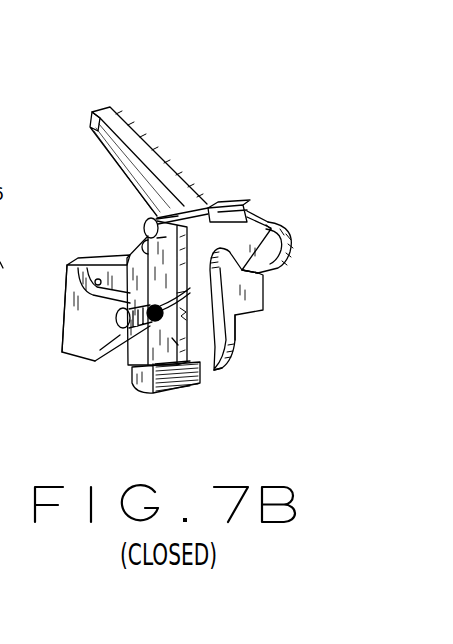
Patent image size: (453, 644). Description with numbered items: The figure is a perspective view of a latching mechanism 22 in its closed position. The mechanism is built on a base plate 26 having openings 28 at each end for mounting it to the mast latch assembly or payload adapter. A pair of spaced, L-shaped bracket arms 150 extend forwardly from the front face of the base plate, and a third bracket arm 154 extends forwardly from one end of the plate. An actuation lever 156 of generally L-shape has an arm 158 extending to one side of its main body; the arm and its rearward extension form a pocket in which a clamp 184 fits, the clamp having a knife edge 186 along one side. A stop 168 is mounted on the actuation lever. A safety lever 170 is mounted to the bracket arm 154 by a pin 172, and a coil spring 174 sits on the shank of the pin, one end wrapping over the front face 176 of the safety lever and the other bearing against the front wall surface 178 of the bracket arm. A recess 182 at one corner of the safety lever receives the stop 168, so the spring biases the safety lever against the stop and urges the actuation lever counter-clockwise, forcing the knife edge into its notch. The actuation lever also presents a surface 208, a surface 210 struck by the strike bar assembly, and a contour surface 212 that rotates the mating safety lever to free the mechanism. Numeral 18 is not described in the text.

The clamp 184 is at (157, 151).
The knife edge 186 is at (103, 150).
The stop 168 is at (153, 212).
The surface of actuation lever 208 is at (292, 247).
The surface on actuation lever 210 is at (272, 230).
The actuation lever 156 is at (270, 271).
The recess 182 is at (241, 208).
The safety lever 170 is at (201, 248).
The L-shaped bracket arms 150 is at (133, 256).
The third bracket arm 154 is at (105, 340).
The openings 28 is at (98, 278).
The base plate 26 is at (73, 356).
The pin 172 is at (102, 355).
The front wall surface of bracket arm 178 is at (128, 366).
The pin 18 is at (170, 390).
The coil spring 174 is at (174, 342).
The arm 158 is at (254, 292).
The contour surface 212 is at (240, 352).
The front face of safety lever 176 is at (222, 360).
The latching mechanism 22 is at (292, 162).